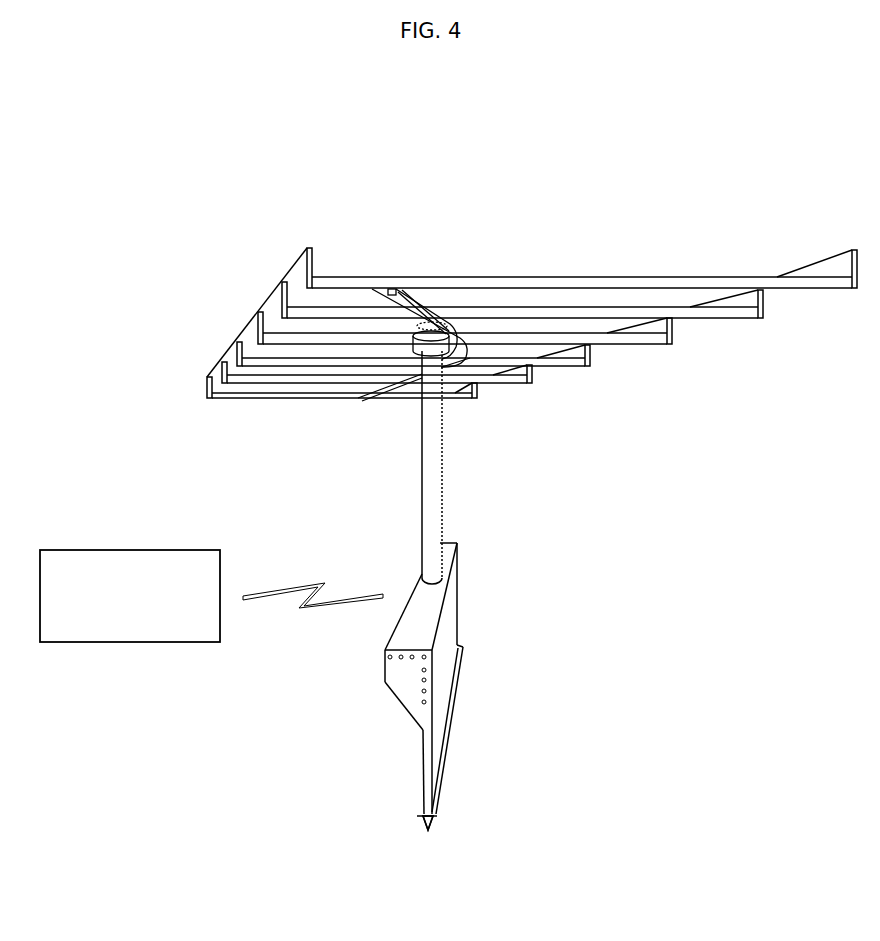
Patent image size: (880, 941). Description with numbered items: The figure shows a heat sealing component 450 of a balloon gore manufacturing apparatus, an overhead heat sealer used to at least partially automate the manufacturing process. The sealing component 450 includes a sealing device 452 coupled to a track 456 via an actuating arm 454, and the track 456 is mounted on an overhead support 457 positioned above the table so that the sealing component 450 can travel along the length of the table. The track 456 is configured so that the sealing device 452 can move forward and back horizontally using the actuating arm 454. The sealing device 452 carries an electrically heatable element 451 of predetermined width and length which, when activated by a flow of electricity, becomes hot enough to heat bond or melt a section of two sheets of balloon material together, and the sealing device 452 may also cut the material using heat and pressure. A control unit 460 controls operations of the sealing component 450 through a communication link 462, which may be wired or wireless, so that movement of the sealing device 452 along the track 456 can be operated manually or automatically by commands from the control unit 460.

The heat sealing component 450 is at (710, 202).
The electrically heatable element 451 is at (437, 815).
The sealing device 452 is at (435, 633).
The actuating arm 454 is at (435, 450).
The track 456 is at (445, 320).
The overhead support 457 is at (305, 273).
The control unit 460 is at (130, 550).
The communication link 462 is at (287, 587).